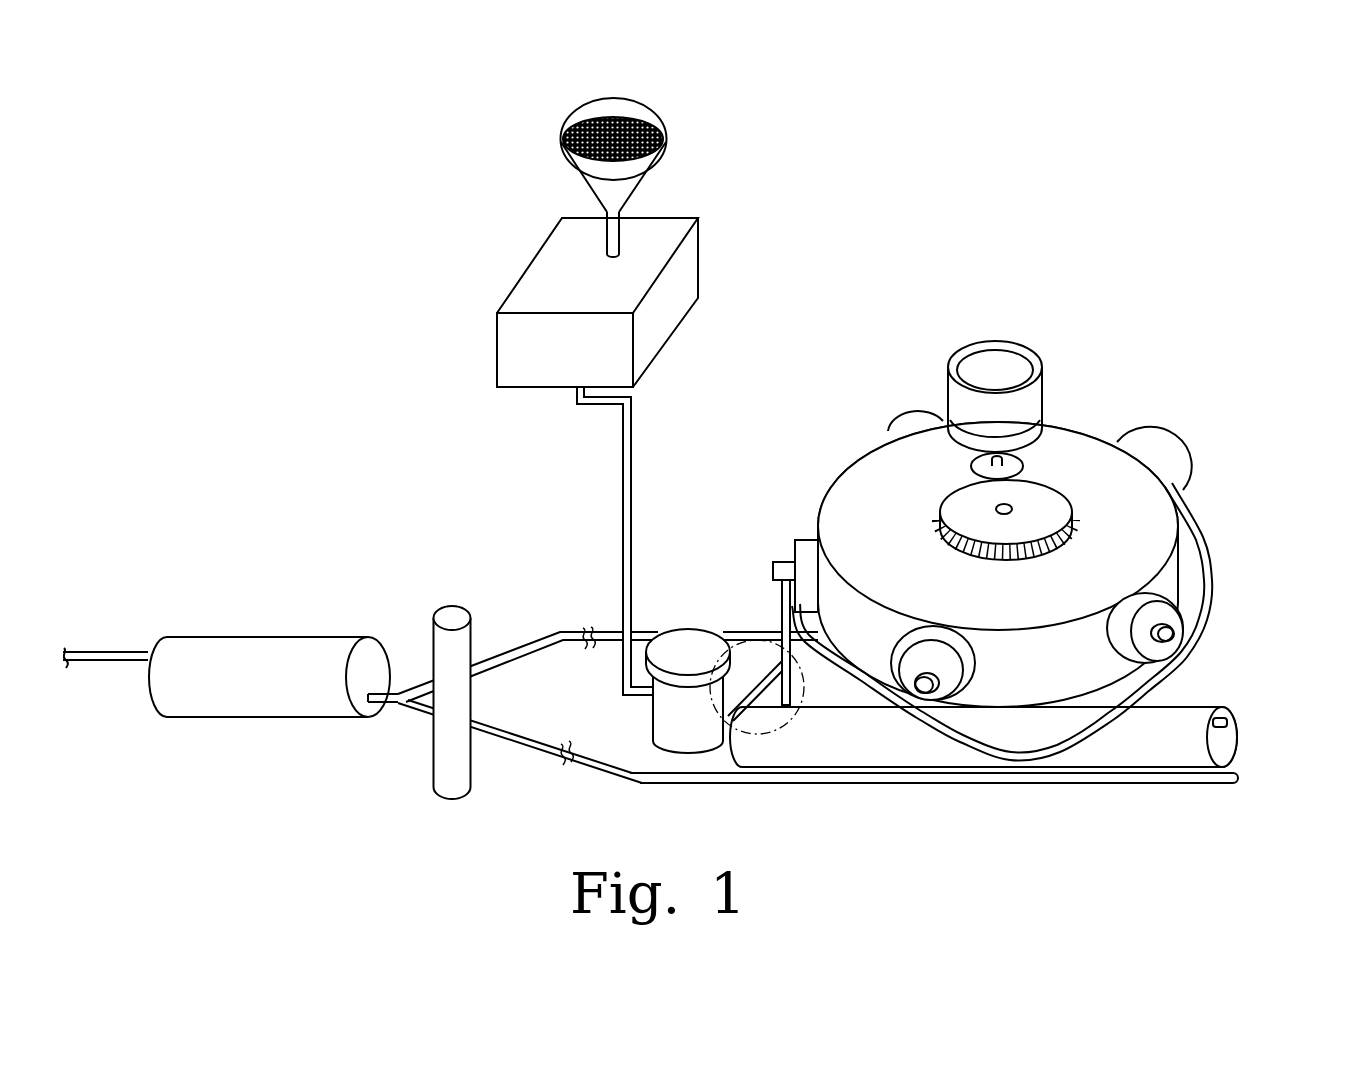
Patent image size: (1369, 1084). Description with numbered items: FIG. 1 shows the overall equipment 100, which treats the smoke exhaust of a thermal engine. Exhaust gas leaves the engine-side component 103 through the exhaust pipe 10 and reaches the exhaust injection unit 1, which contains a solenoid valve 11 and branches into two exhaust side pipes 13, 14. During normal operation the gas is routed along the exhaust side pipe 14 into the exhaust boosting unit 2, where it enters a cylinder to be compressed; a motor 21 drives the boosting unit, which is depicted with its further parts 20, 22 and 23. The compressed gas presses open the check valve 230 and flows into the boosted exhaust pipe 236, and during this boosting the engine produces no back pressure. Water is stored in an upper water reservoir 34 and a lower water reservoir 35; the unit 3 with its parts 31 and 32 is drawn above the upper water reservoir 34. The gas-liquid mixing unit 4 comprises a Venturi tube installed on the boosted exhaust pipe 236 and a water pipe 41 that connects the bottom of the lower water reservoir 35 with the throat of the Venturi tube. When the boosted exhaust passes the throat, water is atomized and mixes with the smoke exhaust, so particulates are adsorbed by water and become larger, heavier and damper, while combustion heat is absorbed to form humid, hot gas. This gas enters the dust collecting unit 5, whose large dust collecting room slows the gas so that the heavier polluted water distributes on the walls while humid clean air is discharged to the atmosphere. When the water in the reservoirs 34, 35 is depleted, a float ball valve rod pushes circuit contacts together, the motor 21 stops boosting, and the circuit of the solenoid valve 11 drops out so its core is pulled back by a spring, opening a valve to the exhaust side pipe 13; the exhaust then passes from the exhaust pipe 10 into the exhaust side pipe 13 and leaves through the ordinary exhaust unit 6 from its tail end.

The polishing system 100 is at (1235, 229).
The exhaust injection unit 1 is at (360, 671).
The exhaust pipe 10 is at (388, 713).
The solenoid valve 11 is at (466, 608).
The exhaust side pipe 13 is at (532, 748).
The exhaust side pipe 14 is at (550, 644).
The storage tank 103 is at (262, 637).
The exhaust boosting unit 2 is at (1036, 504).
The turntable 20 is at (878, 452).
The motor 21 is at (1012, 342).
The coupling 22 is at (1023, 457).
The polishing wheel 23 is at (1073, 510).
The check valve 230 is at (790, 553).
The boosted exhaust pipe 236 is at (757, 560).
The feeding device 3 is at (582, 233).
The funnel 31 is at (667, 150).
The filter screen 32 is at (564, 135).
The upper water reservoir 34 is at (512, 350).
The lower water reservoir 35 is at (680, 733).
The gas-liquid mixing unit 4 is at (764, 661).
The water pipe 41 is at (755, 700).
The dust collecting unit 5 is at (1228, 689).
The ordinary exhaust unit 6 is at (1083, 800).